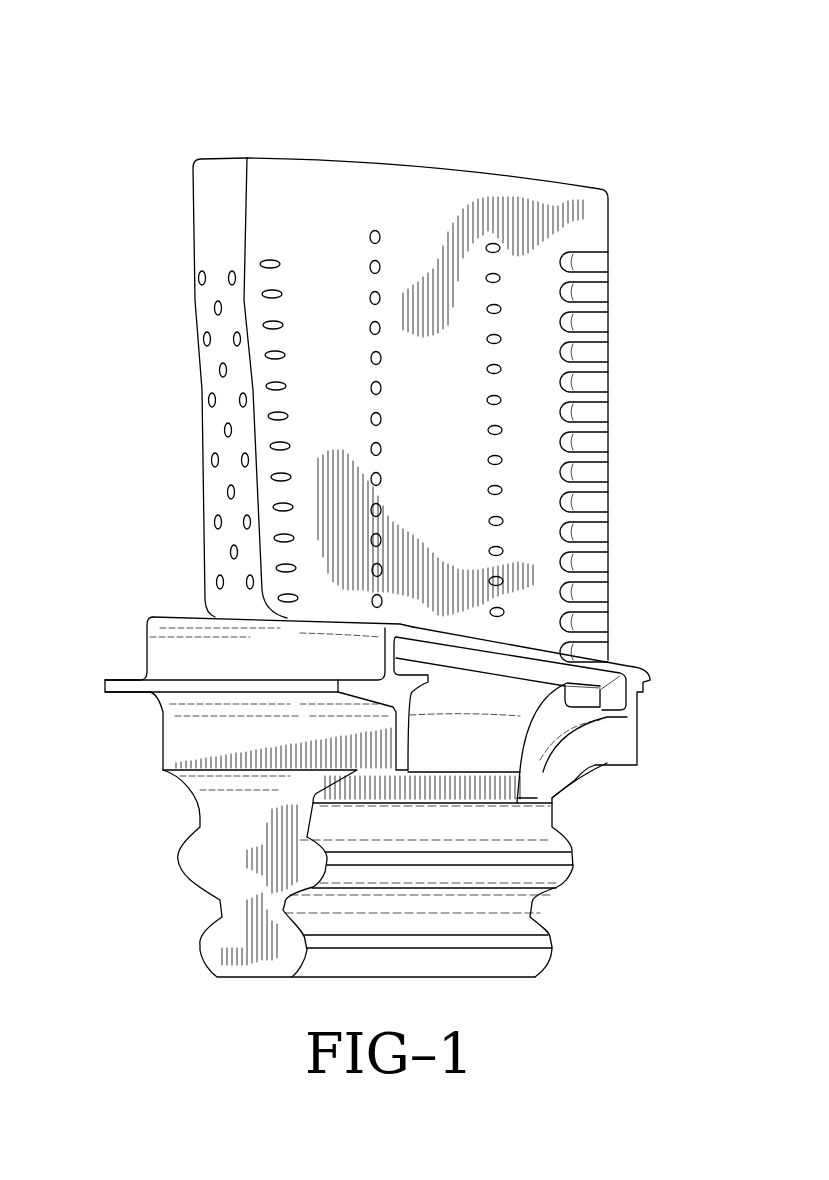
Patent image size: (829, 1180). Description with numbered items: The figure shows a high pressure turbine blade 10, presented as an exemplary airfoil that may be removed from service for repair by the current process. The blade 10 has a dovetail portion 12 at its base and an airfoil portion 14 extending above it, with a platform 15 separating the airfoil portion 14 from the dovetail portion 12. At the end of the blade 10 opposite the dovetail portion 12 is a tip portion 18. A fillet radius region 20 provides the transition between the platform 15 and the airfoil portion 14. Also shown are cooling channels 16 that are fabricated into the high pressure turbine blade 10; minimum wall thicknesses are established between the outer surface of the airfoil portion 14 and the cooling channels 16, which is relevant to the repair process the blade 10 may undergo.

The high pressure turbine blade 10 is at (121, 129).
The dovetail portion 12 is at (482, 758).
The airfoil portion 14 is at (451, 444).
The platform 15 is at (633, 663).
The cooling channels 16 is at (210, 400).
The tip portion 18 is at (428, 165).
The fillet radius region 20 is at (206, 612).